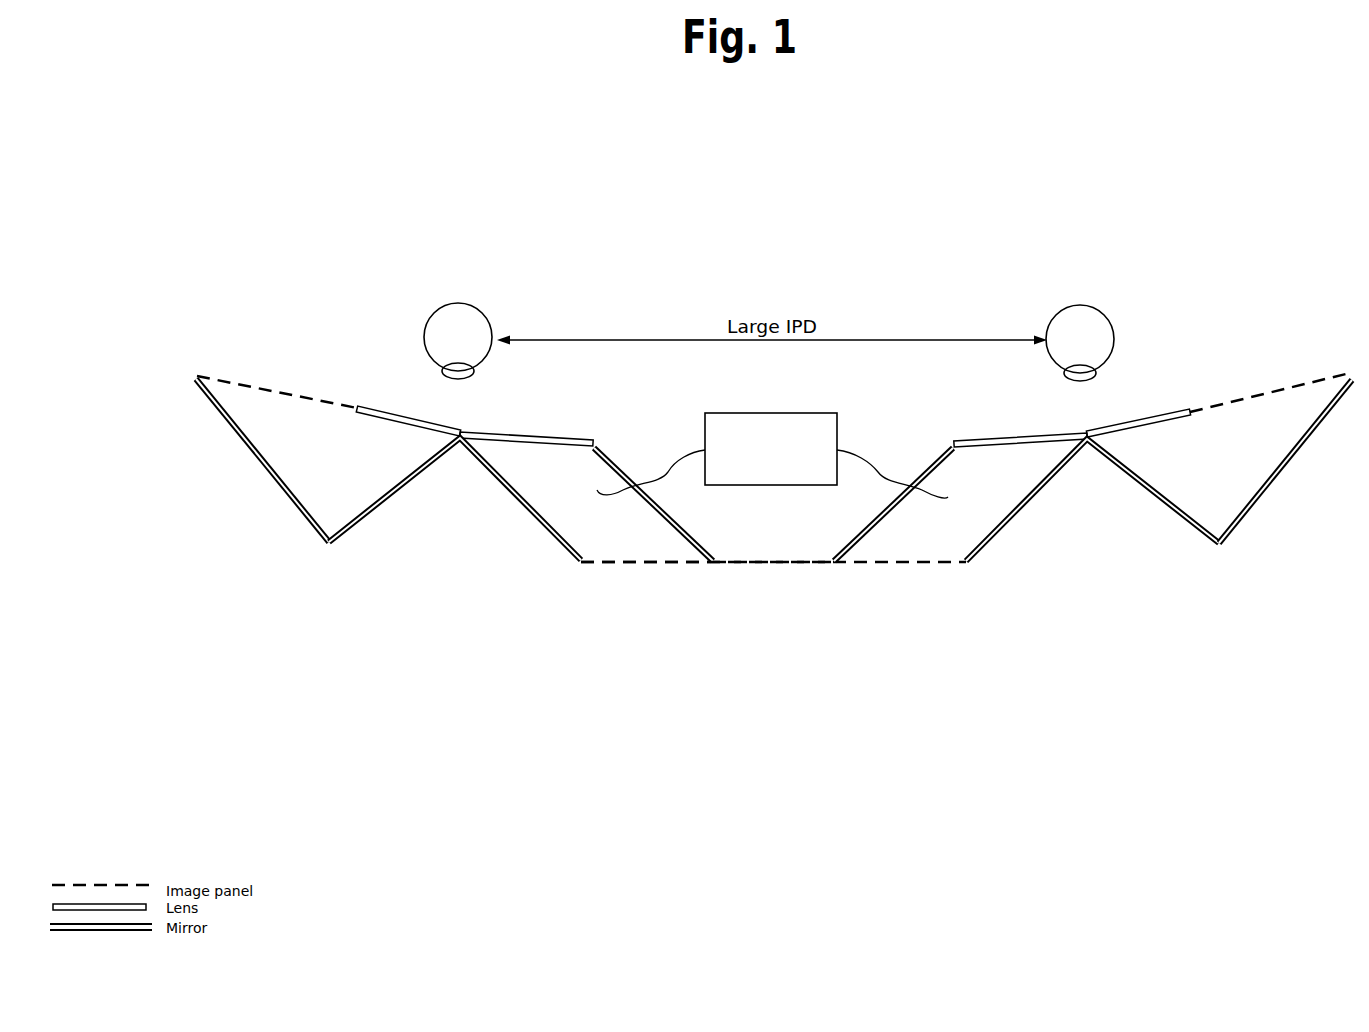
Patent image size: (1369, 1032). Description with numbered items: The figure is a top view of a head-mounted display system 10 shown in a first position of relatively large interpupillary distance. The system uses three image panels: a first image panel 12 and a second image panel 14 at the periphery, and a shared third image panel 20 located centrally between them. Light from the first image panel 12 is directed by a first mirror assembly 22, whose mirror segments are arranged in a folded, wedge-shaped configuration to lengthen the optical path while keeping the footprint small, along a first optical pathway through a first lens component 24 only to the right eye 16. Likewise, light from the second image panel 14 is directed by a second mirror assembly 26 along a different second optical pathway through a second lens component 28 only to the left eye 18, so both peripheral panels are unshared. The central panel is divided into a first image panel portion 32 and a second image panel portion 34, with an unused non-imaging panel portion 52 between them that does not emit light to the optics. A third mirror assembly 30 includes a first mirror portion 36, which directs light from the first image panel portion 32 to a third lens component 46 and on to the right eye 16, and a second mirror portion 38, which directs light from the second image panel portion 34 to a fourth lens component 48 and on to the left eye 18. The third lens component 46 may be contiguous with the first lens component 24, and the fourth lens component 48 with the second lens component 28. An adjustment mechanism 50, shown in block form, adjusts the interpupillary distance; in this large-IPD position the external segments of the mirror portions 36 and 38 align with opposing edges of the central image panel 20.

The head-mounted display (HMD) system 10 is at (860, 266).
The first image panel 12 is at (285, 393).
The second image panel 14 is at (1275, 393).
The right eye 16 is at (486, 312).
The left eye 18 is at (1104, 315).
The third image panel 20 is at (767, 586).
The first mirror assembly 22 is at (303, 541).
The first lens component 24 is at (365, 407).
The second mirror assembly 26 is at (1228, 559).
The second lens component 28 is at (1170, 412).
The third mirror assembly 30 is at (546, 550).
The first image panel portion 32 is at (630, 562).
The second image panel portion 34 is at (935, 562).
The first mirror portion 36 is at (538, 520).
The second mirror portion 38 is at (902, 524).
The third lens component 46 is at (565, 433).
The fourth lens component 48 is at (966, 444).
The adjustment mechanism 50 is at (708, 413).
The non-imaging panel portion 52 is at (745, 562).